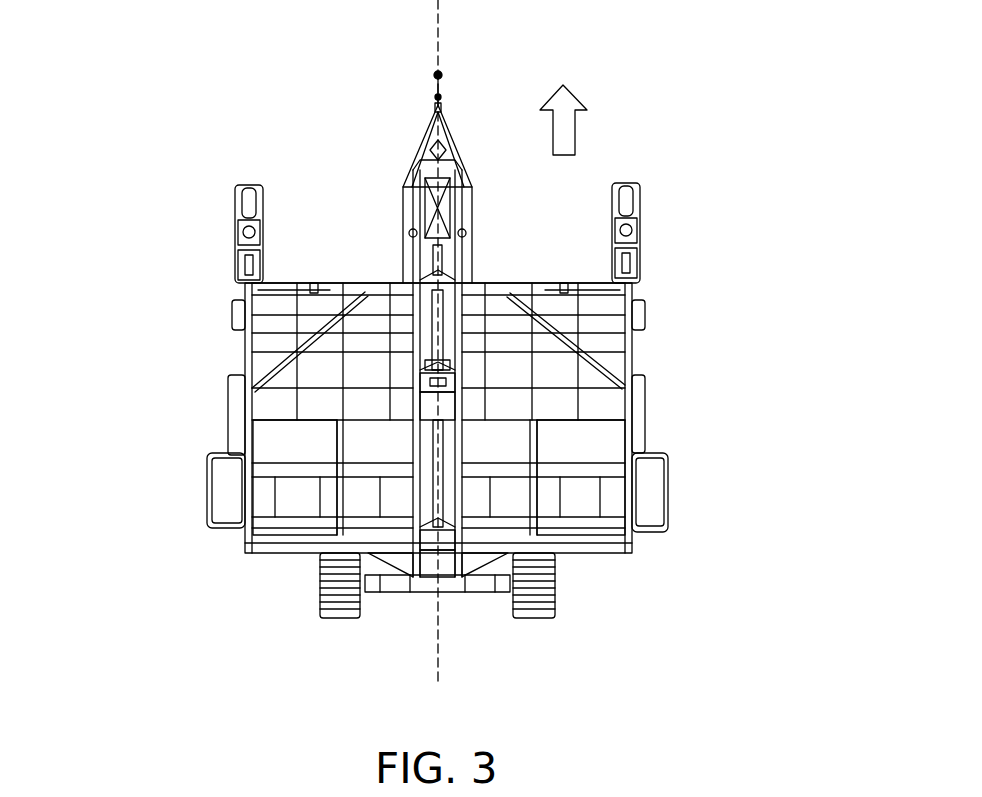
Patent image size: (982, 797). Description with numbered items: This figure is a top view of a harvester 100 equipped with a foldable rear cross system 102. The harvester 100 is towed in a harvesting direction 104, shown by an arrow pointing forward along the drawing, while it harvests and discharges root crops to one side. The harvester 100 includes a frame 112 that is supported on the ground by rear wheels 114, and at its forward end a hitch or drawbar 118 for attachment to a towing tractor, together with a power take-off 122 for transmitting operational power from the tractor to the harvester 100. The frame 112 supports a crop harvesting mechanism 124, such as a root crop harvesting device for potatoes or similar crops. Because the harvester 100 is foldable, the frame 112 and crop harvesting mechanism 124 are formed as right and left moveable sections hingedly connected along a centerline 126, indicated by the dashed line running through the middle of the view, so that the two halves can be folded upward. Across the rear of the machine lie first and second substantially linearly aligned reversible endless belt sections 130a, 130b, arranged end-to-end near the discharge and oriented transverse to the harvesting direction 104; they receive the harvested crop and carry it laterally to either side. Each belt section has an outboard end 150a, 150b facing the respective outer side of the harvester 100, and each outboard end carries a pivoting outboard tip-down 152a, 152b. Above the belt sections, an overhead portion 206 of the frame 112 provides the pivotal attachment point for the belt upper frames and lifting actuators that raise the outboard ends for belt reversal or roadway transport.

The harvester 100 is at (155, 140).
The foldable rear cross system 102 is at (665, 535).
The harvesting direction 104 is at (580, 130).
The frame 112 is at (243, 330).
The rear wheels 114 is at (325, 618).
The hitch or drawbar 118 is at (455, 150).
The power take-off 122 is at (435, 90).
The crop harvesting mechanism 124 is at (510, 370).
The centerline 126 is at (440, 620).
The first endless belt section 130a is at (575, 505).
The second endless belt section 130b is at (300, 505).
The outboard end of first belt section 150a is at (685, 485).
The outboard end of second belt section 150b is at (185, 483).
The outboard tip-down of first belt section 152a is at (670, 470).
The outboard tip-down of second belt section 152b is at (207, 465).
The overhead portion of the harvester frame 206 is at (418, 363).